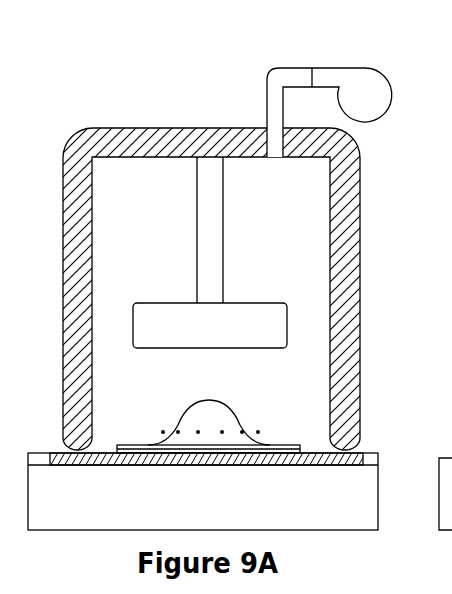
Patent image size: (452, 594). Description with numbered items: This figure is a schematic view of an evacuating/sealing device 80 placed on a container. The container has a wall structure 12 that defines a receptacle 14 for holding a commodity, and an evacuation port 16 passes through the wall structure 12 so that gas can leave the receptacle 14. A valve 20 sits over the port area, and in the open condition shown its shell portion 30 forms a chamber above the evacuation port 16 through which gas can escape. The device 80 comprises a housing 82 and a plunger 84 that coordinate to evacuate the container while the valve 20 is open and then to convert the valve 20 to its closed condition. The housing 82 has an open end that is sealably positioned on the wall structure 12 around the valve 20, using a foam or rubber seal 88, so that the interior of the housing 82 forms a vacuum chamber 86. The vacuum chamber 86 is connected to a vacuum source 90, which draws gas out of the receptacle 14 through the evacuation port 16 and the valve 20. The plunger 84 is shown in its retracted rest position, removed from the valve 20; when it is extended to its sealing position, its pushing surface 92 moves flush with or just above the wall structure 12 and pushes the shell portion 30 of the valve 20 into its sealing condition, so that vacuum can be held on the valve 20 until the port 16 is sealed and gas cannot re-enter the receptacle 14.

The wall structure 12 is at (337, 466).
The receptacle 14 is at (203, 491).
The evacuation port 16 is at (211, 455).
The valve 20 is at (256, 421).
The shell portion 30 is at (187, 411).
The evacuating/sealing device 80 is at (369, 280).
The housing 82 is at (362, 233).
The plunger 84 is at (140, 323).
The vacuum chamber 86 is at (247, 230).
The seal 88 is at (78, 447).
The vacuum source 90 is at (372, 91).
The pushing surface 92 is at (167, 349).